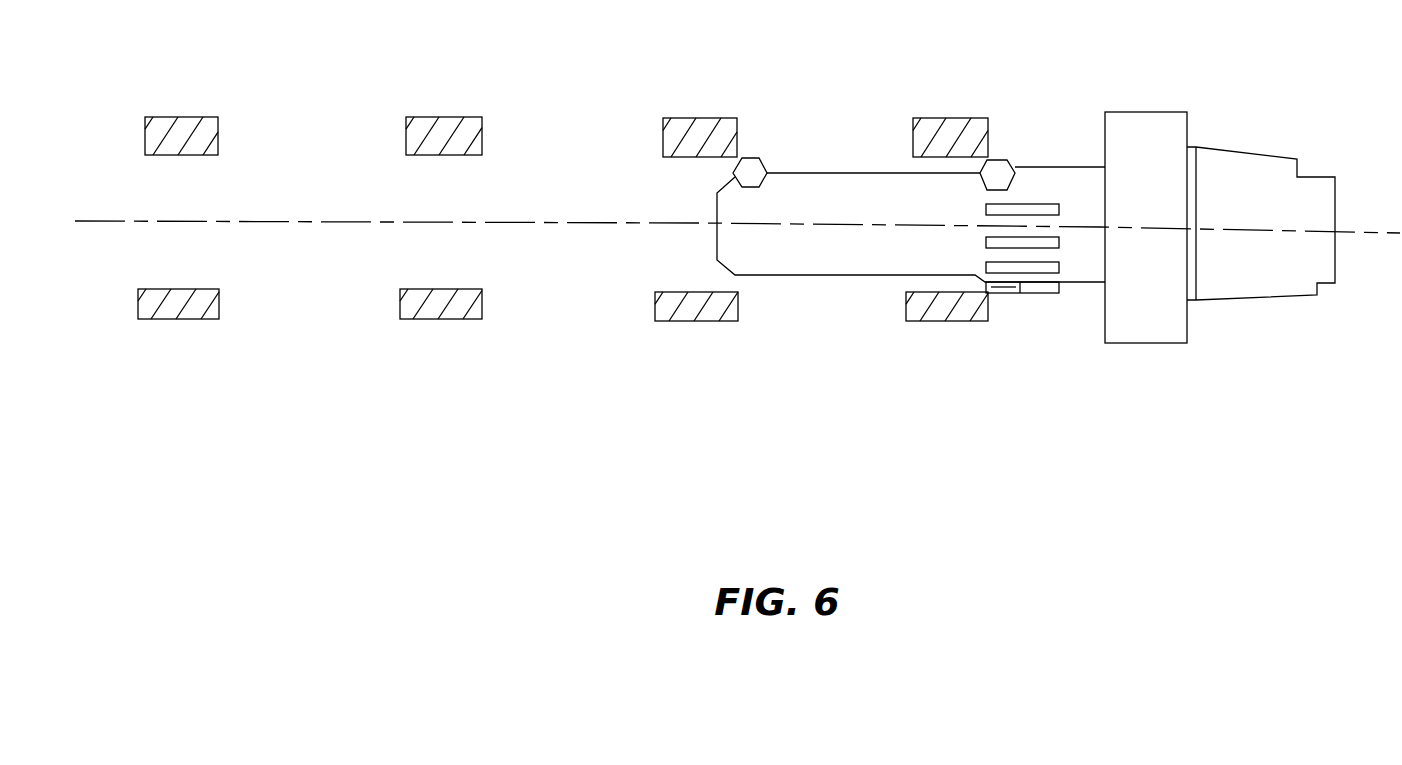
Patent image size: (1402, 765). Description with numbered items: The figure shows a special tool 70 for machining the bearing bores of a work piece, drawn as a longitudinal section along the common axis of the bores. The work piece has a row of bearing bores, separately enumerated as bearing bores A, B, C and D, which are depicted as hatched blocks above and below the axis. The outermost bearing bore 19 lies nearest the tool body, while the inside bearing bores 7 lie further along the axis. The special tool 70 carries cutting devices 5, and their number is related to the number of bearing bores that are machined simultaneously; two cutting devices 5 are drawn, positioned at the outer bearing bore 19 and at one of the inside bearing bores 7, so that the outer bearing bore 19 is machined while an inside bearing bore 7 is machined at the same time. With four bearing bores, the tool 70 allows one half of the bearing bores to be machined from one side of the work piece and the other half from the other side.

The cutting device 5 is at (760, 160).
The bearing bore 7 is at (192, 303).
The bearing bore 19 is at (920, 293).
The special tool 70 is at (1080, 283).
The bearing bore A is at (936, 155).
The bearing bore B is at (706, 142).
The bearing bore C is at (460, 140).
The bearing bore D is at (200, 138).